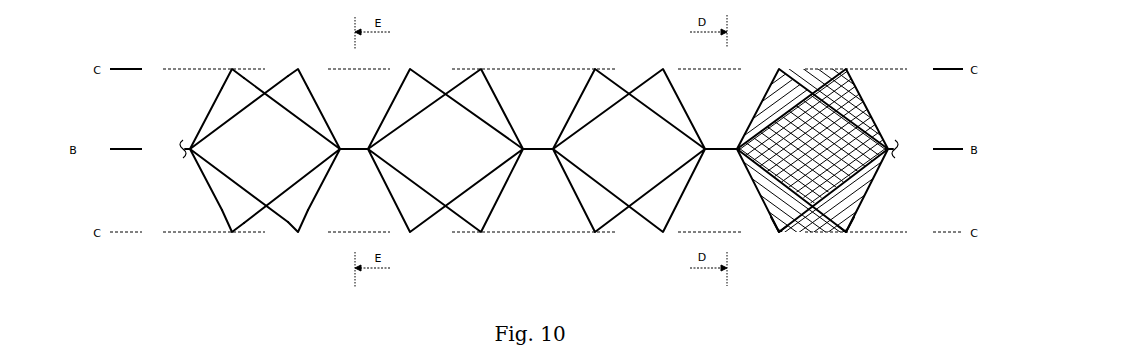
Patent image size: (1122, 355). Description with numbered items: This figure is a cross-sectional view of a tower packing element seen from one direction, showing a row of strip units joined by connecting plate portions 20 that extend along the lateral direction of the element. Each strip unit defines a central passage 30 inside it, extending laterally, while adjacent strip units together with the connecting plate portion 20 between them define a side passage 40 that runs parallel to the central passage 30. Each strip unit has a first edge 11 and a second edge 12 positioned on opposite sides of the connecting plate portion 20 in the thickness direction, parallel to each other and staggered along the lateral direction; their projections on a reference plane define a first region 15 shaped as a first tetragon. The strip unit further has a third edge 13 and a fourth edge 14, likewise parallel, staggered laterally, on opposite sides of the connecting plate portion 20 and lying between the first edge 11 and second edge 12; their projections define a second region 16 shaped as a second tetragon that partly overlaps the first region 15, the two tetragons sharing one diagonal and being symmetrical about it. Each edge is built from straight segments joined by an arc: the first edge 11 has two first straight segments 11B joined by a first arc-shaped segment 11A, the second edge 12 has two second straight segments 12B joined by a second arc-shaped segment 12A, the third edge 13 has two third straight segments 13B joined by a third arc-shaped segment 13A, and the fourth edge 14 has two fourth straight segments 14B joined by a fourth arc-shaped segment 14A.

The first edge 11 is at (219, 30).
The first arc-shaped segment 11A is at (230, 66).
The first straight segments 11B is at (207, 110).
The second edge 12 is at (544, 207).
The second arc-shaped segment 12A is at (297, 237).
The second straight segments 12B is at (228, 182).
The third edge 13 is at (167, 233).
The third arc-shaped segment 13A is at (230, 237).
The third straight segments 13B is at (207, 190).
The fourth edge 14 is at (540, 93).
The fourth arc-shaped segment 14A is at (298, 66).
The fourth straight segments 14B is at (317, 105).
The first region 15 is at (842, 218).
The second region 16 is at (781, 220).
The connecting plate portion 20 is at (183, 143).
The central passage 30 is at (475, 88).
The side passage 40 is at (533, 90).